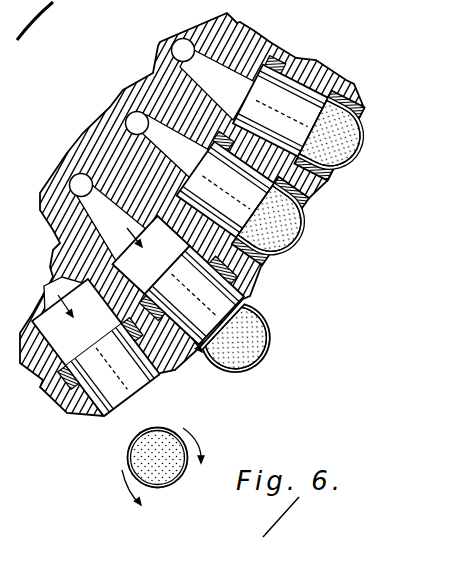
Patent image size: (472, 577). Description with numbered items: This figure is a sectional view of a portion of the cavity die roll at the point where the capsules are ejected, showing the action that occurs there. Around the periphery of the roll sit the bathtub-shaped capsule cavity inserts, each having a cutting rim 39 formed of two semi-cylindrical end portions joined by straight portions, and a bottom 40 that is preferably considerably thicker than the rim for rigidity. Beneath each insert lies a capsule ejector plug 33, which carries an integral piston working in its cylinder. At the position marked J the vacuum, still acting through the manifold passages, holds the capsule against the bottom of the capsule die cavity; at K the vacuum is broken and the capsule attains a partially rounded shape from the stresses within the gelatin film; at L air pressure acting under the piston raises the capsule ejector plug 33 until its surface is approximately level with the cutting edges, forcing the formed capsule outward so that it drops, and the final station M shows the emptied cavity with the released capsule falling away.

The capsule ejector plug 33 is at (235, 307).
The cutting rim 39 is at (158, 365).
The bottom 40 is at (123, 396).
The station J is at (181, 40).
The station K is at (119, 113).
The station L is at (67, 173).
The station M channel M is at (48, 282).